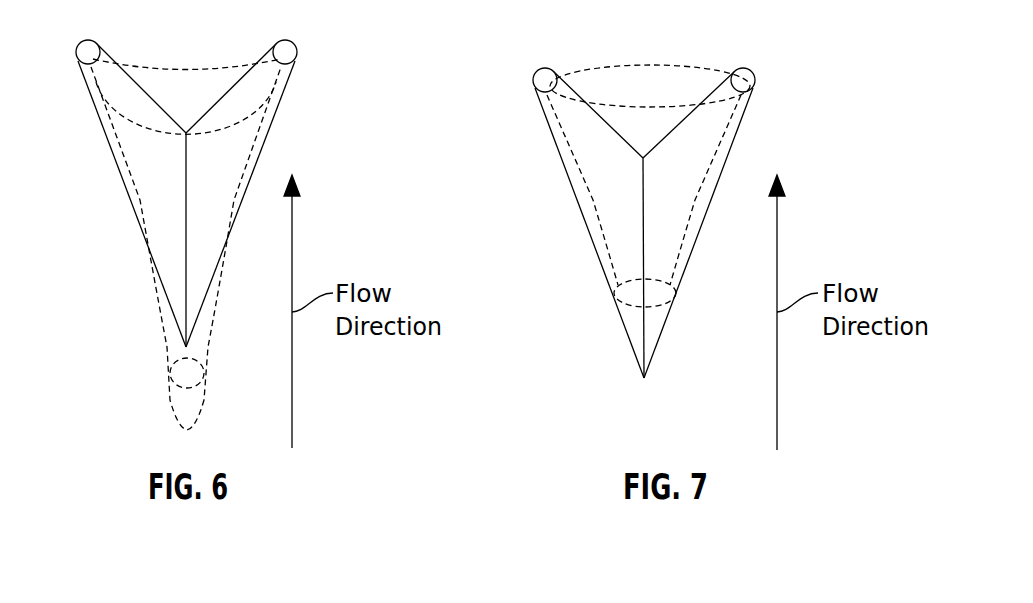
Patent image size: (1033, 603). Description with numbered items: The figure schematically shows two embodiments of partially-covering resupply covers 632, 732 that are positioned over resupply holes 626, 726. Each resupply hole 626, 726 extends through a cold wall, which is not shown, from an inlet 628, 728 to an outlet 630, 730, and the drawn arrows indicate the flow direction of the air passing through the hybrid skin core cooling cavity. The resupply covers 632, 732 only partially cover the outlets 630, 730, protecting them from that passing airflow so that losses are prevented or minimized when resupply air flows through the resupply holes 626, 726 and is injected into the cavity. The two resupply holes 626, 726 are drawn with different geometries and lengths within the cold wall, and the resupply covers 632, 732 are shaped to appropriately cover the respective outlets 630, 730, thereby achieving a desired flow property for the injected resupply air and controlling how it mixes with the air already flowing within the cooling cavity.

In FIG. 6, the resupply hole 626 is at (163, 321).
In FIG. 6, the inlet 628 is at (168, 380).
In FIG. 6, the outlet 630 is at (181, 68).
In FIG. 6, the resupply cover 632 is at (118, 170).
In FIG. 7, the resupply hole 726 is at (622, 254).
In FIG. 7, the inlet 728 is at (620, 297).
In FIG. 7, the outlet 730 is at (643, 65).
In FIG. 7, the resupply cover 732 is at (560, 155).